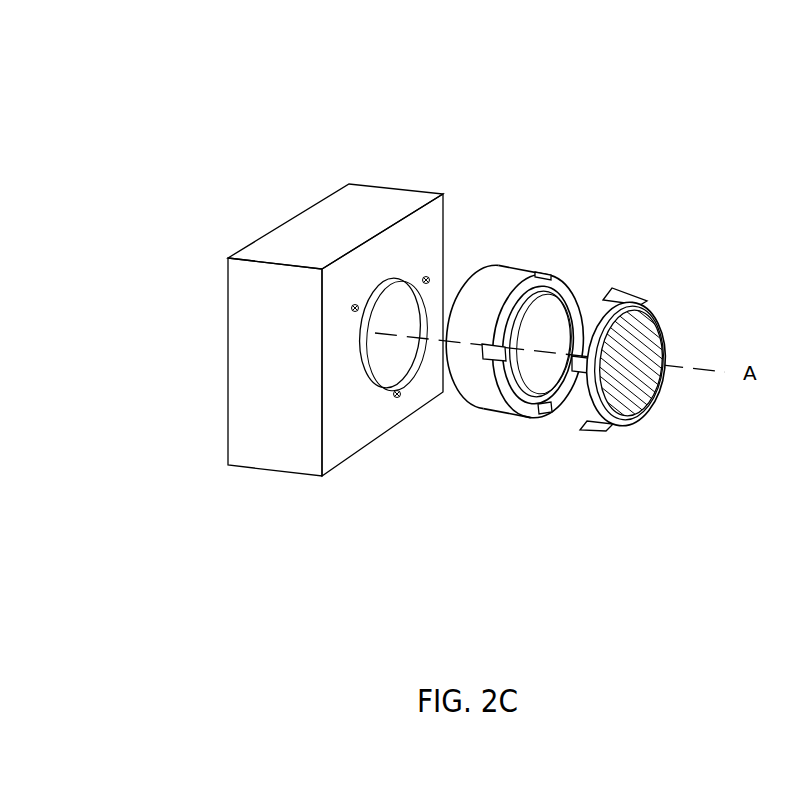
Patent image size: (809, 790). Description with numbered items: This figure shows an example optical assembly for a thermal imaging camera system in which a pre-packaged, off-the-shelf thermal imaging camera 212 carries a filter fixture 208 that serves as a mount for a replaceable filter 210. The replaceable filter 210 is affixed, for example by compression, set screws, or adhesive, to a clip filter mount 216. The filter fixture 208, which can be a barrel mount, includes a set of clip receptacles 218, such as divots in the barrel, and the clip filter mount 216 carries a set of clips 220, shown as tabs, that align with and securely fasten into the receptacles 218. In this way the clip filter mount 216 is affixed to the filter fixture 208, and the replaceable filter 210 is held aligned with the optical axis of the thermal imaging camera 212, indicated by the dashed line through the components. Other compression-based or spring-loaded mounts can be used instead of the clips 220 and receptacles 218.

The thermal imaging camera 212 is at (386, 184).
The filter fixture 208 is at (512, 265).
The clip receptacles 218 is at (499, 356).
The replaceable filter 210 is at (655, 305).
The clips 220 is at (578, 371).
The clip filter mount 216 is at (618, 412).